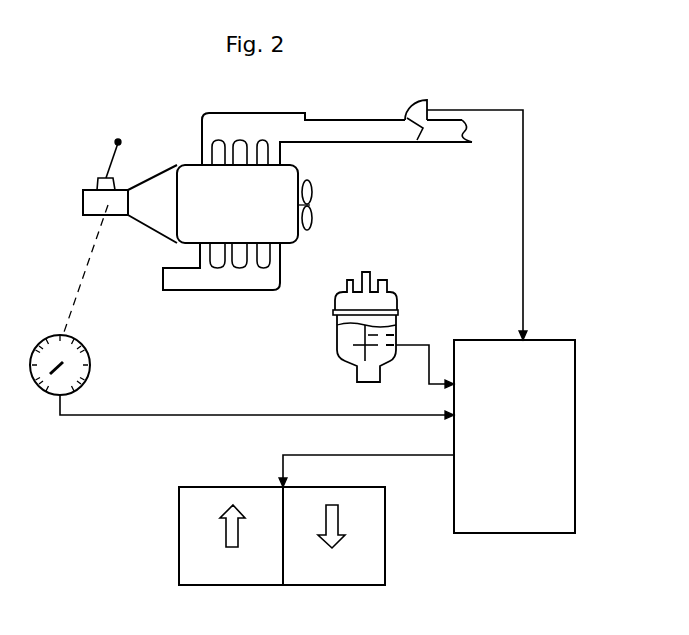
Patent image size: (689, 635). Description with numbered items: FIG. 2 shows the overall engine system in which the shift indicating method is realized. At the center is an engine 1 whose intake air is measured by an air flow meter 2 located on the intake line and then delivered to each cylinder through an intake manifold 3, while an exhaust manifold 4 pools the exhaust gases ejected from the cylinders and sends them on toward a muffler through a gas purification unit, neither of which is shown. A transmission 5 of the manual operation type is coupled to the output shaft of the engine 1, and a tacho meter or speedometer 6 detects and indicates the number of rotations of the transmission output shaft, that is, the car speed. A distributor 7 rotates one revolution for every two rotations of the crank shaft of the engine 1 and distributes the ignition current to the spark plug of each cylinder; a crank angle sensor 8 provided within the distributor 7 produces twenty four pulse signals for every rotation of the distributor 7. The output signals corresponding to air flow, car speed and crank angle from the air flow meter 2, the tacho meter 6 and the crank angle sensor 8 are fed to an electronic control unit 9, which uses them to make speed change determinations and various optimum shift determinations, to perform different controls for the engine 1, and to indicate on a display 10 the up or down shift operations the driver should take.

The engine 1 is at (320, 207).
The air flow meter 2 is at (424, 101).
The intake manifold 3 is at (247, 118).
The exhaust manifold 4 is at (237, 283).
The transmission 5 is at (97, 178).
The tacho meter or speedometer 6 is at (91, 367).
The distributor 7 is at (390, 302).
The crank angle sensor 8 is at (398, 341).
The electronic control unit 9 is at (568, 428).
The display 10 is at (180, 553).